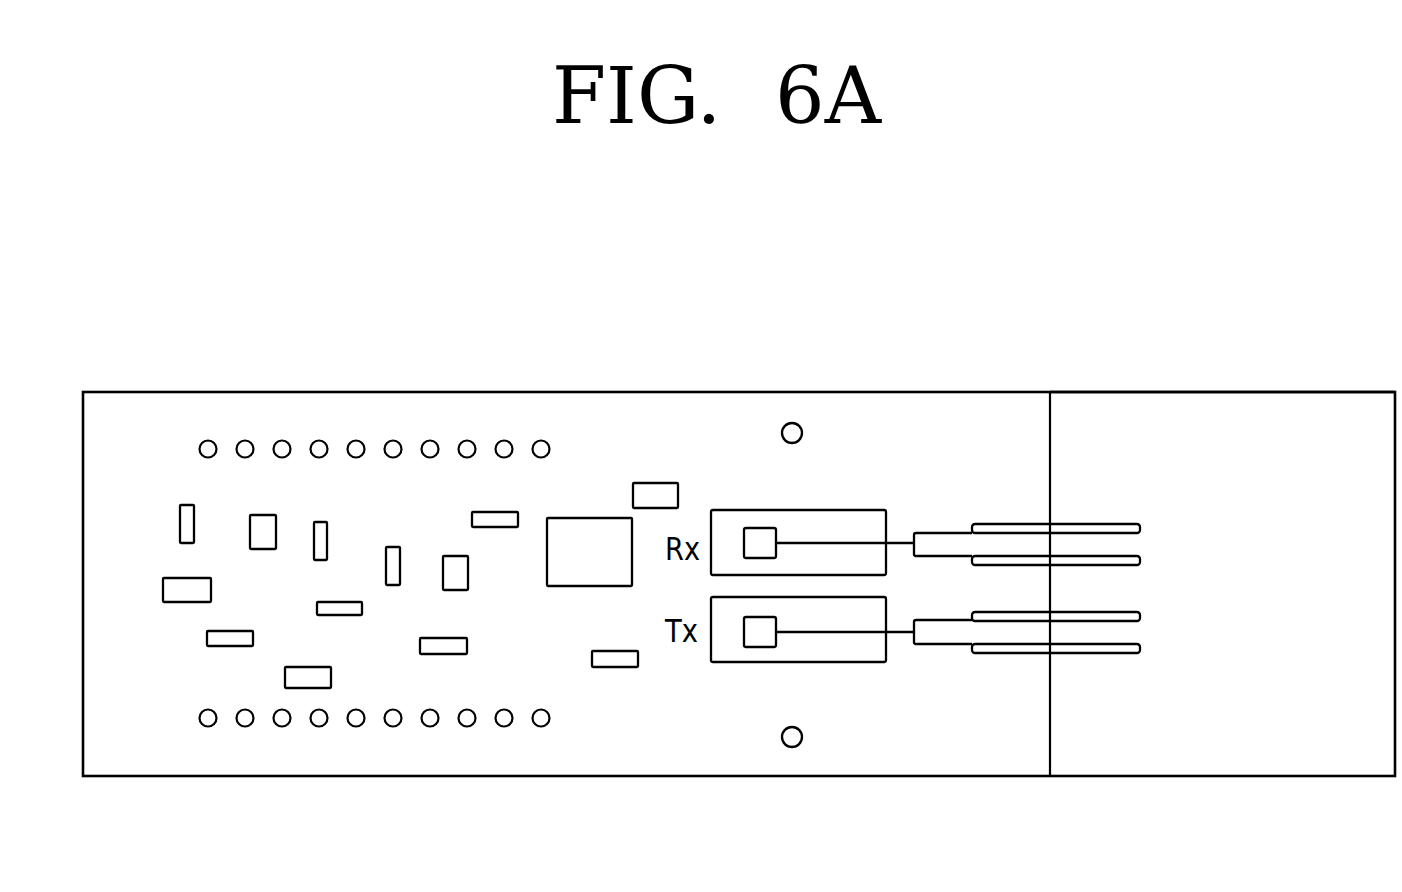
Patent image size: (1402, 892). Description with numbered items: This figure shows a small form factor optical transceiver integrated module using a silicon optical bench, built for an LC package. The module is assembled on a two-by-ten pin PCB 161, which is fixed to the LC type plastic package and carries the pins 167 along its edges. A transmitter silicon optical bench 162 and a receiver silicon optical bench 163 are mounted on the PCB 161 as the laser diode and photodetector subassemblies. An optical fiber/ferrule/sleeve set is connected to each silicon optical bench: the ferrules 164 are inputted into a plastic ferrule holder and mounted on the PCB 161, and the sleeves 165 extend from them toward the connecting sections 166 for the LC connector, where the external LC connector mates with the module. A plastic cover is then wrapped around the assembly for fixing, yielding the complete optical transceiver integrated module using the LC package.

The 2×10 pin PCB 161 is at (634, 453).
The transmitter silicon optical bench 162 is at (858, 650).
The receiver silicon optical bench 163 is at (835, 527).
The ferrules 164 is at (934, 545).
The sleeves 165 is at (1090, 530).
The connecting sections for the LC connector 166 is at (1288, 422).
The pins 167 is at (204, 438).